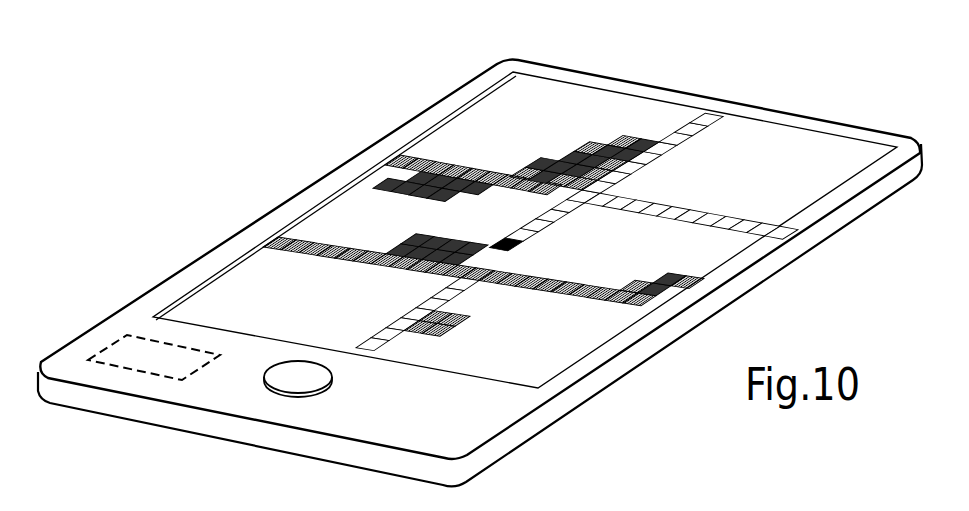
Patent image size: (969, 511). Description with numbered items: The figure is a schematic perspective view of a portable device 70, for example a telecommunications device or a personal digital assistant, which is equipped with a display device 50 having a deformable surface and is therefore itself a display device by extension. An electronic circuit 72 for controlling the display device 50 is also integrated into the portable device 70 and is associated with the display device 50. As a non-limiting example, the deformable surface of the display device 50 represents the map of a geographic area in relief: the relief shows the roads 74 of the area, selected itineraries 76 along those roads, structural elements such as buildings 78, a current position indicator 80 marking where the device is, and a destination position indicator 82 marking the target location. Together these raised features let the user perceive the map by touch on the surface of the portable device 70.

The display device 50 is at (777, 148).
The portable device 70 is at (229, 199).
The electronic circuit 72 is at (133, 348).
The roads 74 is at (693, 117).
The selected itineraries 76 is at (553, 215).
The buildings 78 is at (418, 233).
The current position indicator 80 is at (510, 238).
The destination position indicator 82 is at (450, 312).